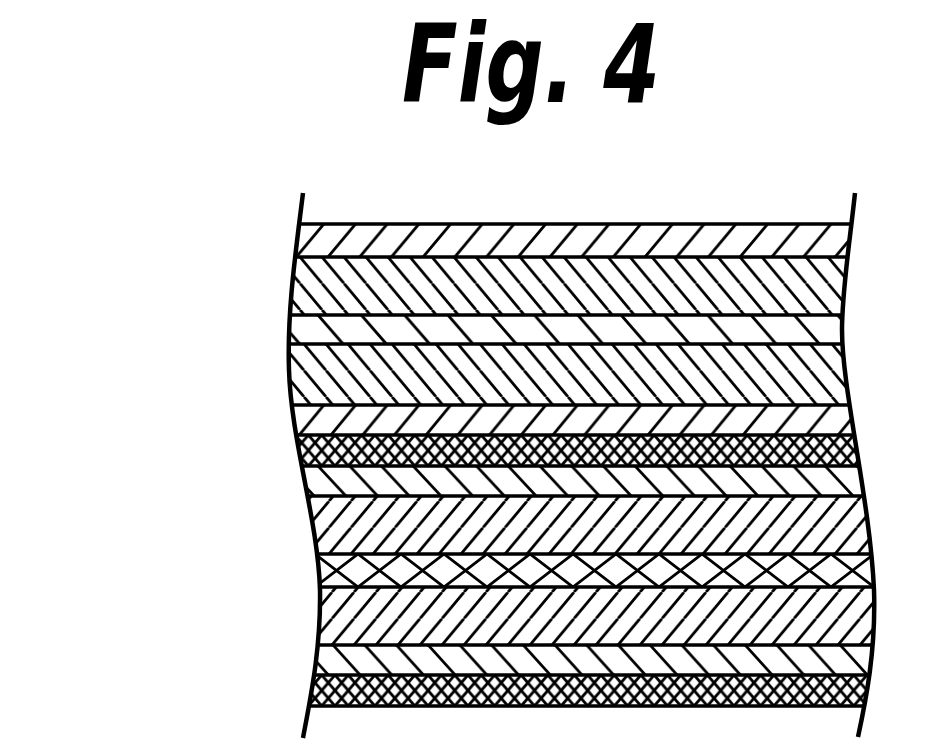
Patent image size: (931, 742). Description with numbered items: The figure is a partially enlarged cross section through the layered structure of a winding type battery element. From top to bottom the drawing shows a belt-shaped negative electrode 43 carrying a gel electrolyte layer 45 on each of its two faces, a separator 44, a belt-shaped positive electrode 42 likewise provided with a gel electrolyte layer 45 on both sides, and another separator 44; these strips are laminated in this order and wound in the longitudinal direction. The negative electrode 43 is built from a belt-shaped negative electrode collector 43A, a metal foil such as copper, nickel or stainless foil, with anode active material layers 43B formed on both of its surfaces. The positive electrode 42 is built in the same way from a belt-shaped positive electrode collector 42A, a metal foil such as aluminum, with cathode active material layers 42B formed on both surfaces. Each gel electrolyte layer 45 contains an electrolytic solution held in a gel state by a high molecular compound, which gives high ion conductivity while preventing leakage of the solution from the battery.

The positive electrode 42 is at (138, 510).
The positive electrode collector 42A is at (318, 568).
The cathode active material layers 42B is at (312, 525).
The negative electrode 43 is at (138, 268).
The negative electrode collector 43A is at (295, 328).
The anode active material layers 43B is at (297, 279).
The separator 44 is at (300, 448).
The gel electrolyte layer 45 is at (297, 237).